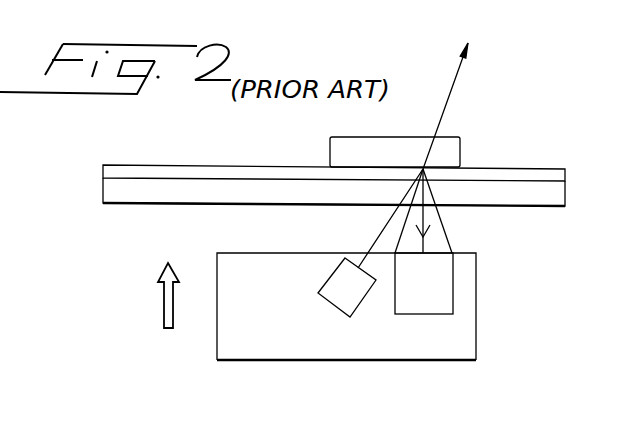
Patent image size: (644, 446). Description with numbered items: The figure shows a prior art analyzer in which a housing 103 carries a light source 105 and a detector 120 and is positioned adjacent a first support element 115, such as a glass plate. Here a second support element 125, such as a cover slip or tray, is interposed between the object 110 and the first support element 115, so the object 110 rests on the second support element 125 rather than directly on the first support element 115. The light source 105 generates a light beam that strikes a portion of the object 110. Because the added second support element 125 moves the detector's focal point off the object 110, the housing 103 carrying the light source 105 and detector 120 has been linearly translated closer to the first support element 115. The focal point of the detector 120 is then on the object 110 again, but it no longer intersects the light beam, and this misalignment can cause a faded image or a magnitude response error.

The housing 103 is at (247, 361).
The light source 105 is at (326, 283).
The object 110 is at (460, 148).
The first support element 115 is at (557, 207).
The detector 120 is at (403, 314).
The second support element 125 is at (525, 169).